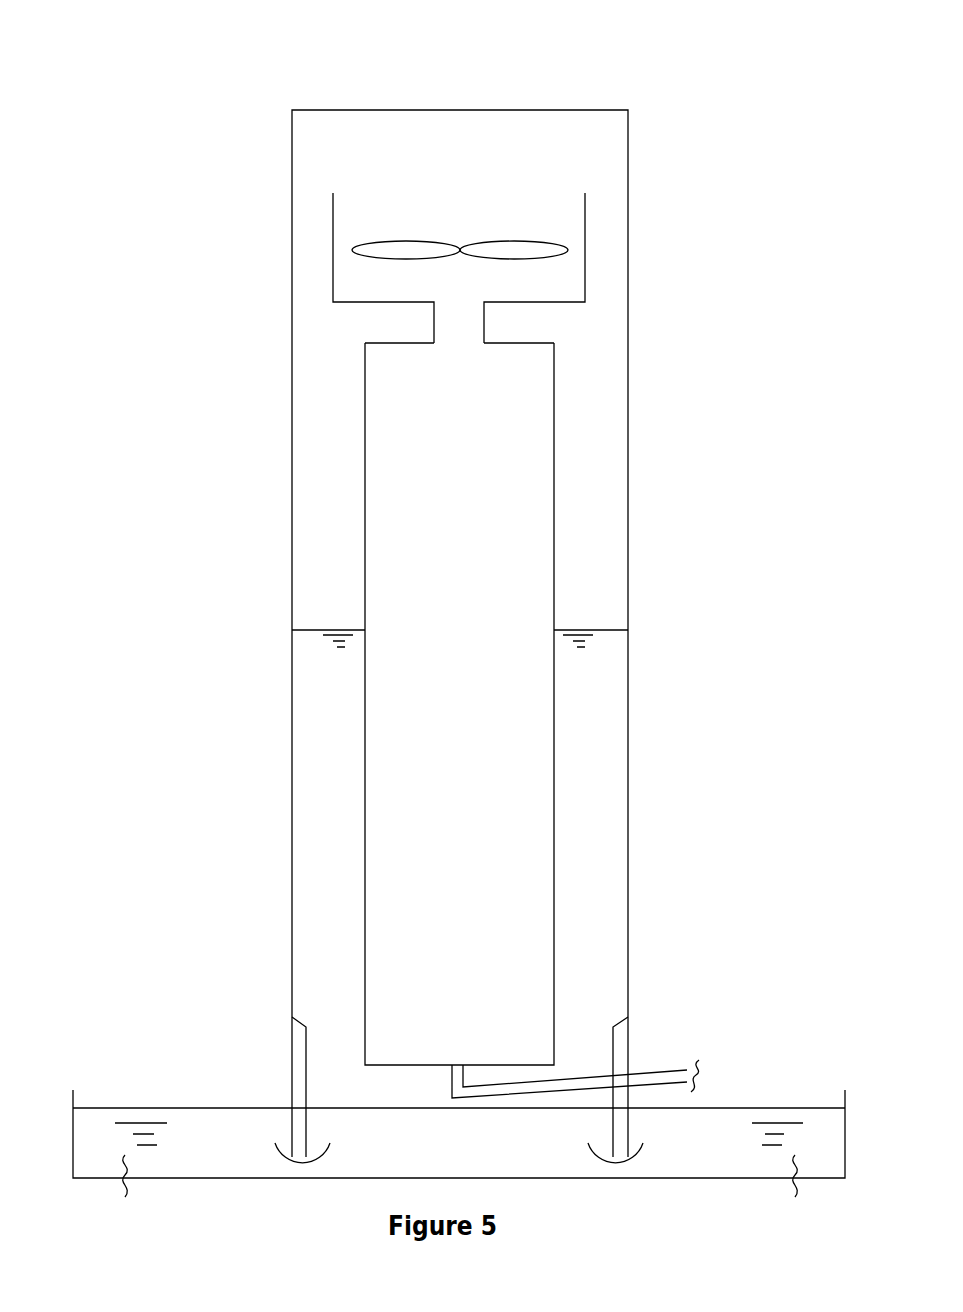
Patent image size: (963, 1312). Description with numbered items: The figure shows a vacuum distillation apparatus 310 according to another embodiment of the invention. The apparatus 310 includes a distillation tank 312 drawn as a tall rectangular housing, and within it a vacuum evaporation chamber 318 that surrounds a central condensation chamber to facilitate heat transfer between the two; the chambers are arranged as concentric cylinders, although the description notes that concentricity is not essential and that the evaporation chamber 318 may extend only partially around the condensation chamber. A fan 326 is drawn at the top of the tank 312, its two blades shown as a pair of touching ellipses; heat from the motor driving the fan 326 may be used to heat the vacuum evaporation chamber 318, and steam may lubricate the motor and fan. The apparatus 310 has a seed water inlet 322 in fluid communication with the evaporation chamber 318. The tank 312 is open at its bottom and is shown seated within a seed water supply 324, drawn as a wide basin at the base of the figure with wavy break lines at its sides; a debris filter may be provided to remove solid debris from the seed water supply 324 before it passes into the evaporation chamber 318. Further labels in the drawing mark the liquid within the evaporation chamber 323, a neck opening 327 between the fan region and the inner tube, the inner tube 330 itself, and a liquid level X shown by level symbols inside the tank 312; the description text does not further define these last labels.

The vacuum distillation apparatus 310 is at (178, 82).
The distillation tank 312 is at (293, 172).
The vacuum evaporation chamber 318 is at (323, 432).
The seed water inlet 322 is at (337, 1107).
The liquid in annular passage 323 is at (323, 760).
The seed water supply 324 is at (97, 1133).
The fan 326 is at (561, 212).
The neck opening 327 is at (458, 330).
The inner tube 330 is at (553, 558).
The liquid level X is at (323, 630).